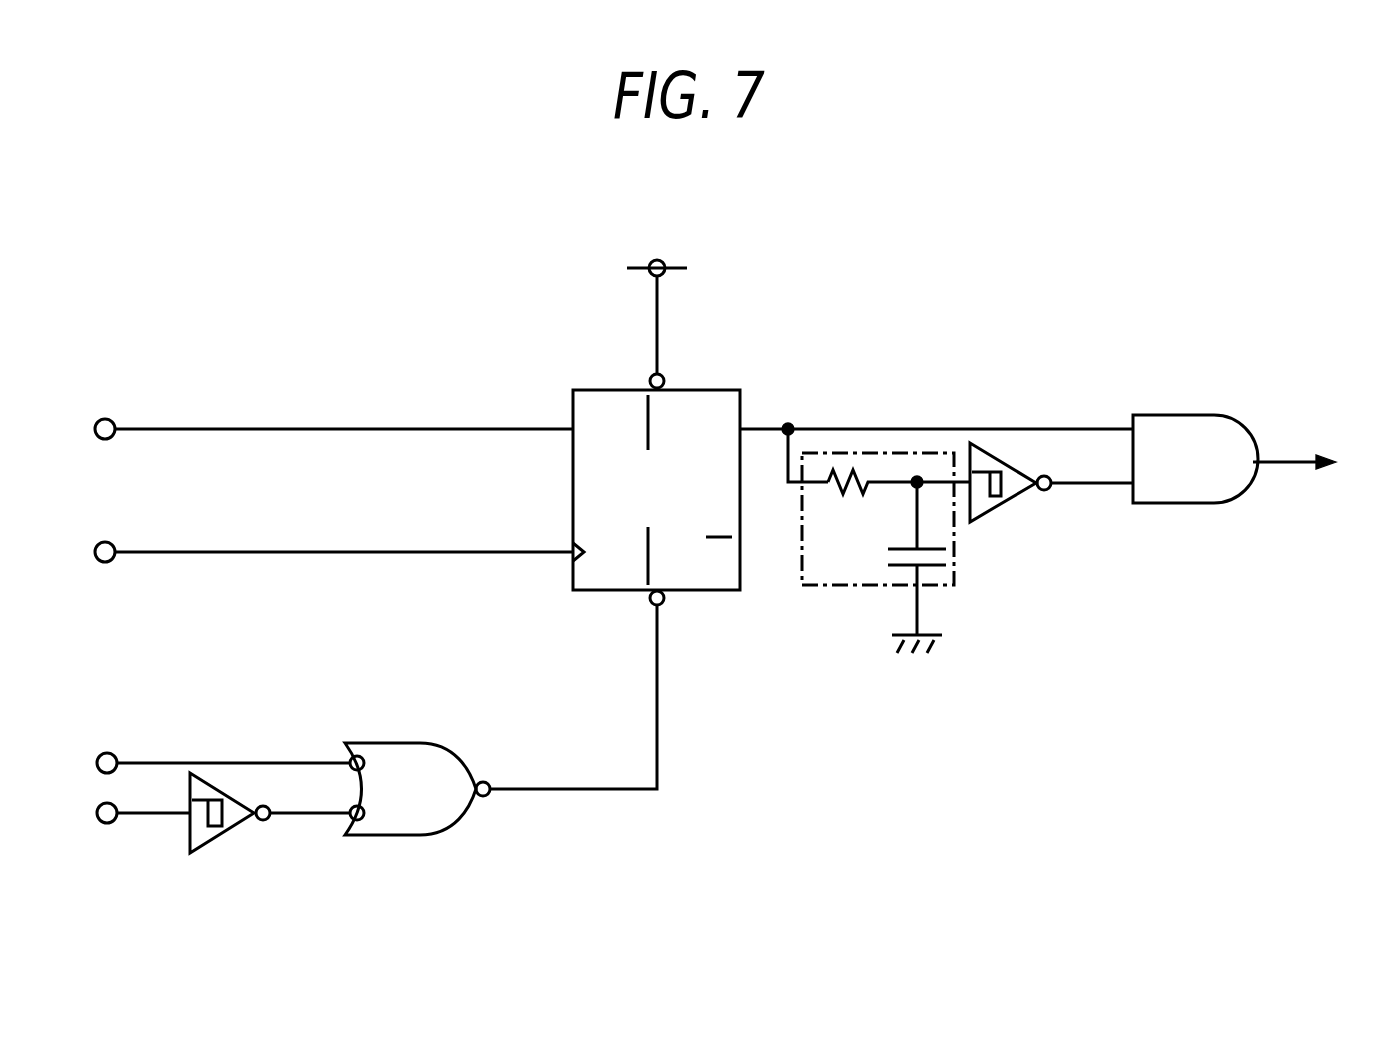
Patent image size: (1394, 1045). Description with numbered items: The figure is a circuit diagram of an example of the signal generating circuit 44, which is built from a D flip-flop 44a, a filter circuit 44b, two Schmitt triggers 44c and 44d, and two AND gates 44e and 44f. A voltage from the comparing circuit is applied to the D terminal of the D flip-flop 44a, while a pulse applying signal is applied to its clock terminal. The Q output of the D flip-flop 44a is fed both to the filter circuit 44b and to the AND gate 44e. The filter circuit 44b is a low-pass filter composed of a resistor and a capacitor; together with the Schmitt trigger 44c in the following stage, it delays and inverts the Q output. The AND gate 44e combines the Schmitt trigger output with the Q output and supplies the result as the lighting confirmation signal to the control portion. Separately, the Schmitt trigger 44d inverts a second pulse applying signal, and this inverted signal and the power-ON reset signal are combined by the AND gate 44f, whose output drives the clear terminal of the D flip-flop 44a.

The signal generating circuit 44 is at (1130, 266).
The D flip-flop 44a is at (712, 388).
The filter circuit 44b is at (826, 588).
The Schmitt trigger 44c is at (996, 455).
The Schmitt trigger 44d is at (224, 855).
The AND gate 44e is at (1182, 415).
The AND gate 44f is at (395, 838).